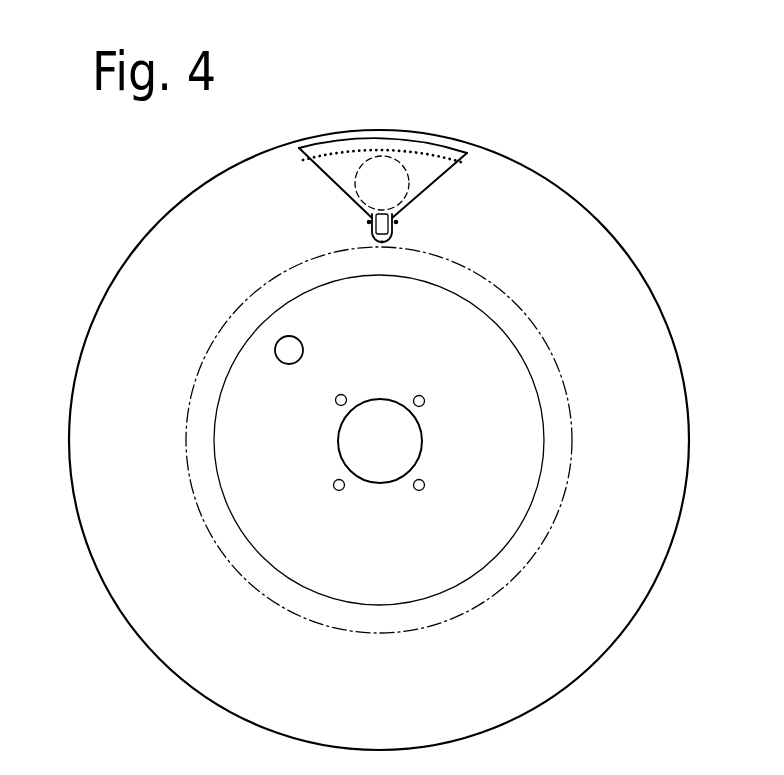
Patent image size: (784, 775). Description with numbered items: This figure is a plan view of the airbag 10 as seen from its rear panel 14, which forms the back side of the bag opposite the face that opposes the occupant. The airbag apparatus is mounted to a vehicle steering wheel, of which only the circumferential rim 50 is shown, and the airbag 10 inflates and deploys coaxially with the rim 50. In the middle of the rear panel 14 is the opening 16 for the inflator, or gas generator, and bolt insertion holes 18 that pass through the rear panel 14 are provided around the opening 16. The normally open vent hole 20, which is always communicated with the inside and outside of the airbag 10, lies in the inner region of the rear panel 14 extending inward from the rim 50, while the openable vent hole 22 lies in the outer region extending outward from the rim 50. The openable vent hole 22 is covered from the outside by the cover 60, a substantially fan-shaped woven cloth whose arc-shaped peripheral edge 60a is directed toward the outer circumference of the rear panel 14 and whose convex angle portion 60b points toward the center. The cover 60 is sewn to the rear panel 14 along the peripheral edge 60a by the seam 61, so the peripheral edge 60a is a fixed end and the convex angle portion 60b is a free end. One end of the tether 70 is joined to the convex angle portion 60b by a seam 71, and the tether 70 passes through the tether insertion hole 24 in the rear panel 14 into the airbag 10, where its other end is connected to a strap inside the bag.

The airbag 10 is at (563, 100).
The rear panel 14 is at (547, 662).
The opening 16 is at (422, 448).
The bolt insertion holes 18 is at (342, 394).
The normally open vent hole 20 is at (278, 340).
The openable vent hole 22 is at (398, 187).
The tether insertion hole 24 is at (387, 235).
The rim 50 is at (562, 422).
The cover 60 is at (336, 178).
The arc-shaped peripheral edge 60a is at (430, 140).
The convex angle portion 60b is at (373, 233).
The seam 61 is at (345, 152).
The tether 70 is at (392, 228).
The seam 71 is at (369, 222).